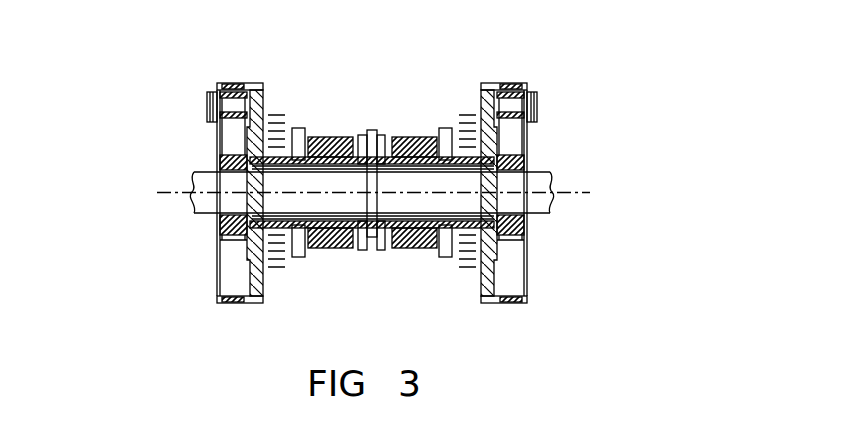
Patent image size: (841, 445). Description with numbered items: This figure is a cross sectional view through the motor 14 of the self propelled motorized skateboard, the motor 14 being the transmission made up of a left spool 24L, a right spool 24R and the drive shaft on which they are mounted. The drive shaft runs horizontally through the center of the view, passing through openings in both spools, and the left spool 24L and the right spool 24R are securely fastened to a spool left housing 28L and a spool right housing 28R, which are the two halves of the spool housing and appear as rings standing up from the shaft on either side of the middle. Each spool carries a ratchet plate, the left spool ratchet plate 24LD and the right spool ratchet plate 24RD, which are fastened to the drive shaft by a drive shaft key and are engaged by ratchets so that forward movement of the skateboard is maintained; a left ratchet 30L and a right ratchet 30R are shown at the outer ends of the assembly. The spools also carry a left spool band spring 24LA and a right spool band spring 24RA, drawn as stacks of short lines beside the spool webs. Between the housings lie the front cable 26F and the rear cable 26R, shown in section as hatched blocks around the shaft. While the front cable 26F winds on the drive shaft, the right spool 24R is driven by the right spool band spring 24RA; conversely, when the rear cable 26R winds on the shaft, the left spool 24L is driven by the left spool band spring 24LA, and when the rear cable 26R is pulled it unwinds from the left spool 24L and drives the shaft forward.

The motor 14 is at (598, 155).
The right spool 24R is at (220, 82).
The left spool 24L is at (507, 80).
The right spool band spring 24RA is at (280, 113).
The left spool band spring 24LA is at (463, 110).
The right spool ratchet plate 24RD is at (238, 155).
The left spool ratchet plate 24LD is at (514, 155).
The front cable 26F is at (335, 138).
The rear cable 26R is at (420, 138).
The spool right housing 28R is at (298, 128).
The spool left housing 28L is at (443, 127).
The right ratchet 30R is at (204, 99).
The left ratchet 30L is at (538, 90).